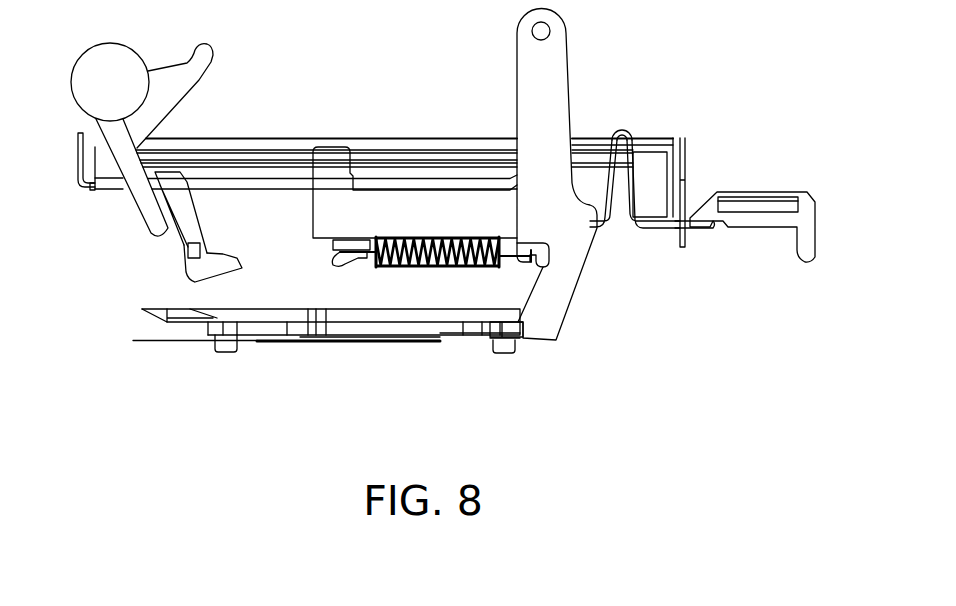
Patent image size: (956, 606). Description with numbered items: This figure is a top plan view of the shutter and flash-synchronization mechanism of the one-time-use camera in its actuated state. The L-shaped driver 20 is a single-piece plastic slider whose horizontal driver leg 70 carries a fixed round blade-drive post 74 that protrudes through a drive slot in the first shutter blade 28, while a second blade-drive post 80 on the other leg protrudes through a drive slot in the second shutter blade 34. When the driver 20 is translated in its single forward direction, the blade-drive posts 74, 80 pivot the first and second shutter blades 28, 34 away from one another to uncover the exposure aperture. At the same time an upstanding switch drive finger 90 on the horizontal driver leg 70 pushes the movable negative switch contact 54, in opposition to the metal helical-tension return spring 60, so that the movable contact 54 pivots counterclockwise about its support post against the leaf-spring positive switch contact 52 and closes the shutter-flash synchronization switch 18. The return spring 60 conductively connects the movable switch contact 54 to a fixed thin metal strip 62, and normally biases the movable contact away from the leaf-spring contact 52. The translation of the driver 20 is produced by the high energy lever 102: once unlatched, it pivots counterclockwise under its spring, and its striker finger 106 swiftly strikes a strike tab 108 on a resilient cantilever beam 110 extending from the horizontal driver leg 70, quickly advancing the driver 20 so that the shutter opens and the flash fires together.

The shutter-flash synchronization switch 18 is at (617, 234).
The L-shaped driver 20 is at (437, 334).
The first shutter blade 28 is at (370, 333).
The second shutter blade 34 is at (320, 344).
The leaf-spring positive switch contact 52 is at (640, 233).
The movable negative switch contact 54 is at (569, 50).
The return spring 60 is at (470, 237).
The metal strip 62 is at (320, 140).
The horizontal driver leg 70 is at (450, 330).
The blade-drive post 74 is at (226, 352).
The blade-drive post 80 is at (500, 350).
The switch drive finger 90 is at (525, 327).
The high energy lever 102 is at (142, 218).
The striker finger 106 is at (230, 262).
The strike tab 108 is at (213, 317).
The resilient cantilever beam 110 is at (198, 313).